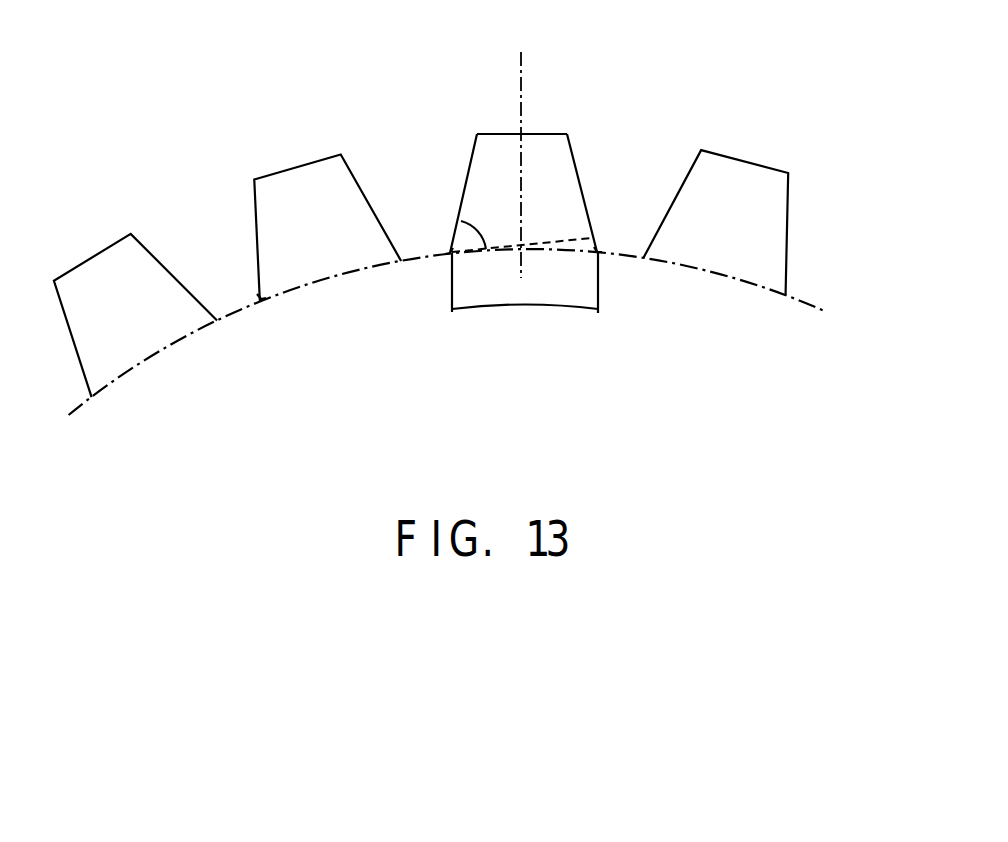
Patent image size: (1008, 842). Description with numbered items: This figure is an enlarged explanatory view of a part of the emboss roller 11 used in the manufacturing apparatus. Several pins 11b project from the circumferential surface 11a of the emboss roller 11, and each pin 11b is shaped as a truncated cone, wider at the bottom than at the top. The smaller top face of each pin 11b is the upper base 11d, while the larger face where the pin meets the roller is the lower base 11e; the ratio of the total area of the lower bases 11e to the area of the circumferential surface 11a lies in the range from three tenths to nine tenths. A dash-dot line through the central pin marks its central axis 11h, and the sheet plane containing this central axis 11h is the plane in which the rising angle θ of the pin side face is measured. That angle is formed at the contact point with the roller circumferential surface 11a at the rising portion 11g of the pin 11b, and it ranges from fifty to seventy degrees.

The emboss roller 11 is at (737, 82).
The circumferential surface 11a is at (813, 303).
The pin 11b is at (592, 160).
The upper base 11d is at (547, 133).
The lower base 11e is at (520, 306).
The rising portion 11g is at (258, 297).
The central axis 11h is at (522, 68).